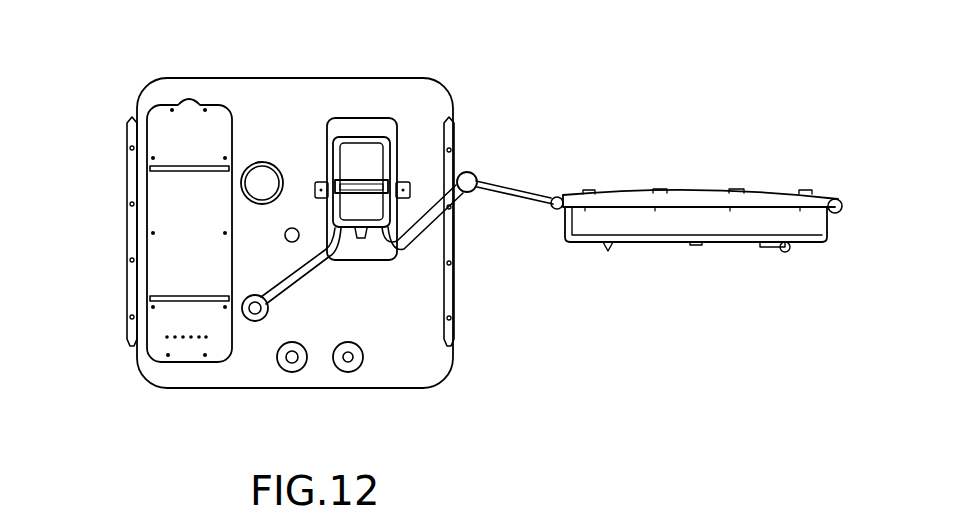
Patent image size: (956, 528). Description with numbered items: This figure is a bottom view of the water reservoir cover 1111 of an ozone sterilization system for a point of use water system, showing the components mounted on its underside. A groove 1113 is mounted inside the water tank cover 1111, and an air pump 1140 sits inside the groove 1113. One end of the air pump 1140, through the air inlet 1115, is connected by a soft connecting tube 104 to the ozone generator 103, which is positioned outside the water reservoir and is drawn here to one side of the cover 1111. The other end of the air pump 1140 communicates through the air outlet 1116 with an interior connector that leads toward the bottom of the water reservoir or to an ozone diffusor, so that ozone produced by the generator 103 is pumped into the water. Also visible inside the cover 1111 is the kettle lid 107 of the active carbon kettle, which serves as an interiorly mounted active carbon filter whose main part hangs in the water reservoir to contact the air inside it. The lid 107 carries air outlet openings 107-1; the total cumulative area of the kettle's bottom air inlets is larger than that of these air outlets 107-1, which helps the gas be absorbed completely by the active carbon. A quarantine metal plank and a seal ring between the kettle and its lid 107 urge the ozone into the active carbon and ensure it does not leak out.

The ozone generator 103 is at (692, 197).
The soft connecting tube 104 is at (498, 190).
The kettle lid 107 is at (163, 123).
The air outlet 107-1 is at (165, 338).
The water reservoir cover 1111 is at (405, 348).
The groove 1113 is at (337, 118).
The air inlet 1115 is at (405, 242).
The air outlet 1116 is at (278, 290).
The air pump 1140 is at (365, 160).